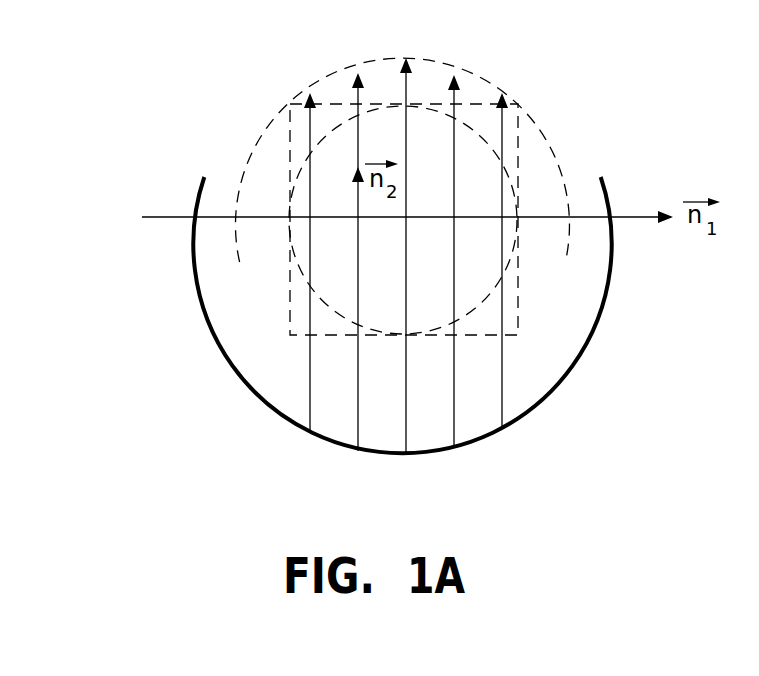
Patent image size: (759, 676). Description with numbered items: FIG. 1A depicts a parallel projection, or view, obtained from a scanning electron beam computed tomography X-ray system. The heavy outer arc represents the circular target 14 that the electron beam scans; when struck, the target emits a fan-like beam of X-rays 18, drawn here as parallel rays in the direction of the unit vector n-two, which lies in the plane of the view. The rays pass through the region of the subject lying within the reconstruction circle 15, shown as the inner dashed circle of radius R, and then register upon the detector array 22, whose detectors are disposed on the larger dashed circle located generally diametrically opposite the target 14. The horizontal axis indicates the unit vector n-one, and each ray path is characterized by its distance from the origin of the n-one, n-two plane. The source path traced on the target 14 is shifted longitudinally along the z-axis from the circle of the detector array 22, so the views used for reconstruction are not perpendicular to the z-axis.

The circular target 14 is at (257, 397).
The reconstruction circle 15 is at (514, 171).
The fan-like beam of X-rays 18 is at (305, 375).
The detector array 22 is at (265, 116).